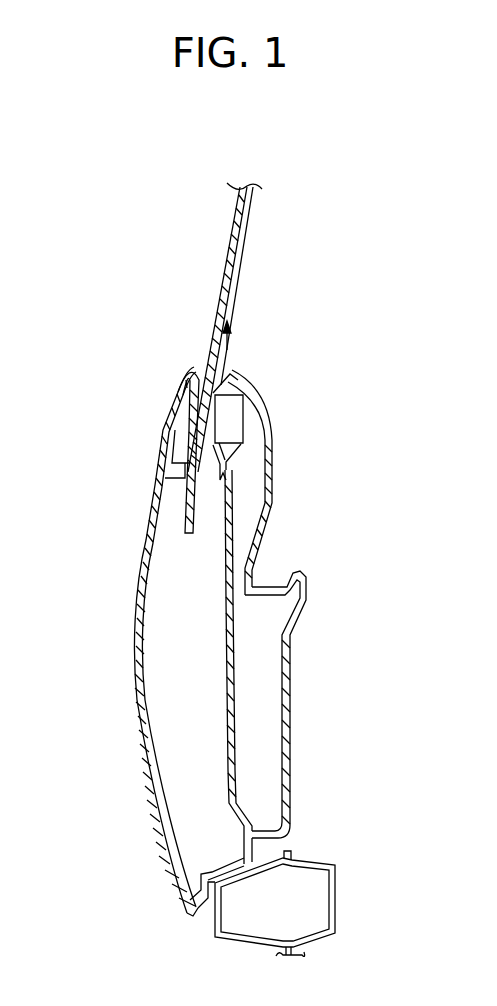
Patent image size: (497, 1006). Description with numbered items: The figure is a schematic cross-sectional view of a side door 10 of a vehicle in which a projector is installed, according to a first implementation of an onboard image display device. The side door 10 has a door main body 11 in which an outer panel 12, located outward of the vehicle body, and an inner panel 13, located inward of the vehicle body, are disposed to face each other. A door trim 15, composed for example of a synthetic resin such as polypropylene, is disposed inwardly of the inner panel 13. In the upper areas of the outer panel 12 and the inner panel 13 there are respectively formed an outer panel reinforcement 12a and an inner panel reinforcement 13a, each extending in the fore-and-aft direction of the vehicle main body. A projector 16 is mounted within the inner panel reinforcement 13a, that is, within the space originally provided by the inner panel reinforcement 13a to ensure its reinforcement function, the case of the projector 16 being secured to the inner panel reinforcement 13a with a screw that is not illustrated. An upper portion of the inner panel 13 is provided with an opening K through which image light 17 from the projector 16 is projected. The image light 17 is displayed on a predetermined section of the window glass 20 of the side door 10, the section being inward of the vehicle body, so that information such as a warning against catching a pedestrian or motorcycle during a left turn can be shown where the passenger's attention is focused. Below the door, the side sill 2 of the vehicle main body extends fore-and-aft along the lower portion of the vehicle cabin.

The side door 10 is at (97, 353).
The door main body 11 is at (147, 792).
The outer panel 12 is at (134, 692).
The outer panel reinforcement 12a is at (176, 479).
The inner panel 13 is at (234, 540).
The inner panel reinforcement 13a is at (237, 458).
The door trim 15 is at (273, 443).
The projector 16 is at (233, 410).
The image light 17 is at (238, 285).
The window glass 20 is at (231, 240).
The opening K is at (236, 380).
The side sill 2 is at (237, 943).